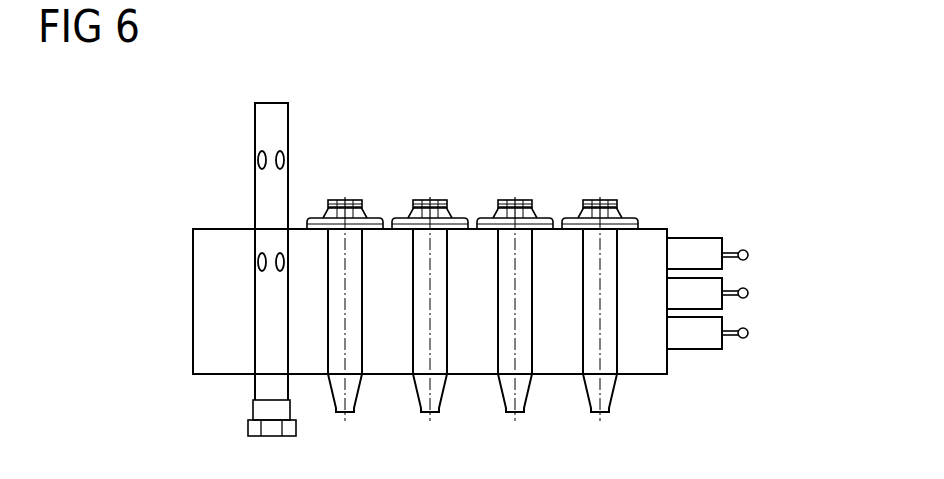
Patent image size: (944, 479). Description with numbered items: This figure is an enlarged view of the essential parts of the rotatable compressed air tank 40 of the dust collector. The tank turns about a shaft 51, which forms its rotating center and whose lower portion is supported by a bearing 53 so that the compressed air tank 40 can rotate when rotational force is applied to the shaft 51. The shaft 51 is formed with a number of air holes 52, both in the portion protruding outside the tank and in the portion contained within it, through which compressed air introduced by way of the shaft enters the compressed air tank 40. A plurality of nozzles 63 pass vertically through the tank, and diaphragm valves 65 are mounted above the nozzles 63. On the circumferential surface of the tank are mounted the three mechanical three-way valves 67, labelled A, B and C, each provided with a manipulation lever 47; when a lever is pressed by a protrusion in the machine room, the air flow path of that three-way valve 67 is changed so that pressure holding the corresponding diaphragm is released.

The compressed air tank 40 is at (205, 326).
The manipulation lever 47 is at (749, 293).
The shaft 51 is at (262, 121).
The air holes 52 is at (257, 160).
The bearing 53 is at (248, 432).
The nozzles 63 is at (350, 398).
The diaphragm valves 65 is at (352, 190).
The mechanical 3-way valves 67 is at (708, 242).